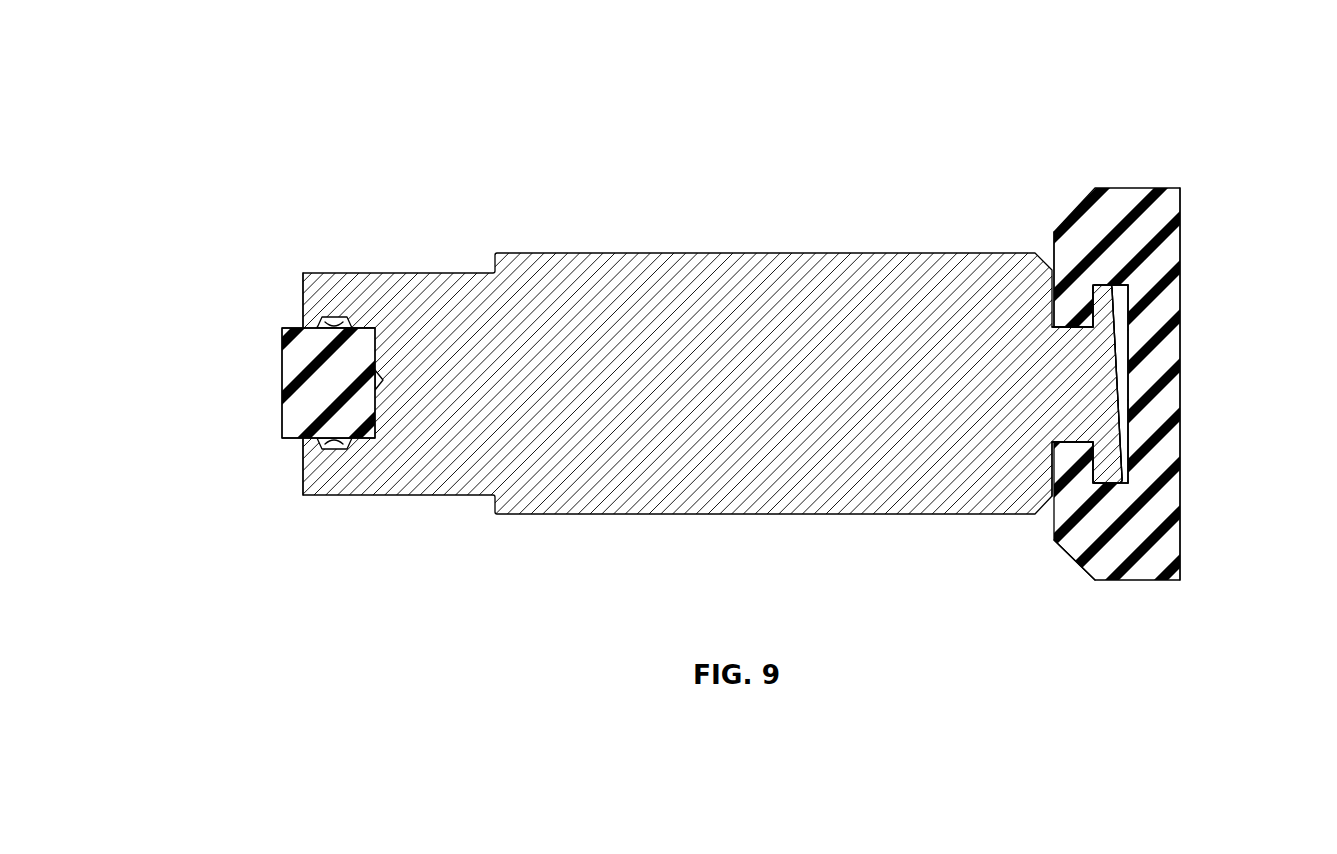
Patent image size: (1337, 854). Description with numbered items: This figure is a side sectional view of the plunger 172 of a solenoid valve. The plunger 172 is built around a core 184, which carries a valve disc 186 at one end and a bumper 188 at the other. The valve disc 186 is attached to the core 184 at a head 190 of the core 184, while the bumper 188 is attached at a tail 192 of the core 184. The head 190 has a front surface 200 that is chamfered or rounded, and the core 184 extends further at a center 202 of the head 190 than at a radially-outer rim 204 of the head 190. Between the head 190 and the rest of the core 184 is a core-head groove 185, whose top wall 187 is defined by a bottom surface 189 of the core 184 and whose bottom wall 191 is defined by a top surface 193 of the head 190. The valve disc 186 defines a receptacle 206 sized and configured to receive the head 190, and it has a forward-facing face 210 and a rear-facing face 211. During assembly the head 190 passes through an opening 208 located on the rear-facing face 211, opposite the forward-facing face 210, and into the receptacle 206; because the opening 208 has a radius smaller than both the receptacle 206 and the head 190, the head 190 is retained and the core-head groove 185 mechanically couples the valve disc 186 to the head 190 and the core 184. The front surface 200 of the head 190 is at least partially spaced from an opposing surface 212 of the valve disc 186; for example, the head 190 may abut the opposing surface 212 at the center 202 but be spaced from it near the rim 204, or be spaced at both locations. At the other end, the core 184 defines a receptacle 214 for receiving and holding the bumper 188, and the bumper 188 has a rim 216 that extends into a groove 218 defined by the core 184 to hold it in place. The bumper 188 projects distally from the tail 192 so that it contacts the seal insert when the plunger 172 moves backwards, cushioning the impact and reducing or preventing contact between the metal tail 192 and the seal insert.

The plunger 172 is at (258, 90).
The core 184 is at (734, 250).
The core-head groove 185 is at (1038, 331).
The valve disc 186 is at (1137, 176).
The top wall 187 is at (1045, 478).
The bumper 188 is at (282, 353).
The bottom surface 189 is at (1082, 486).
The head 190 is at (1118, 393).
The bottom wall 191 is at (1113, 484).
The tail 192 is at (303, 467).
The top surface 193 is at (1100, 460).
The front surface 200 is at (1127, 360).
The center 202 is at (1145, 352).
The radially-outer rim 204 is at (1122, 298).
The receptacle 206 is at (1133, 327).
The opening 208 is at (1085, 322).
The forward-facing face 210 is at (1180, 390).
The rear-facing face 211 is at (1052, 248).
The opposing surface 212 is at (1125, 447).
The receptacle 214 is at (362, 327).
The rim 216 is at (325, 328).
The groove 218 is at (347, 327).